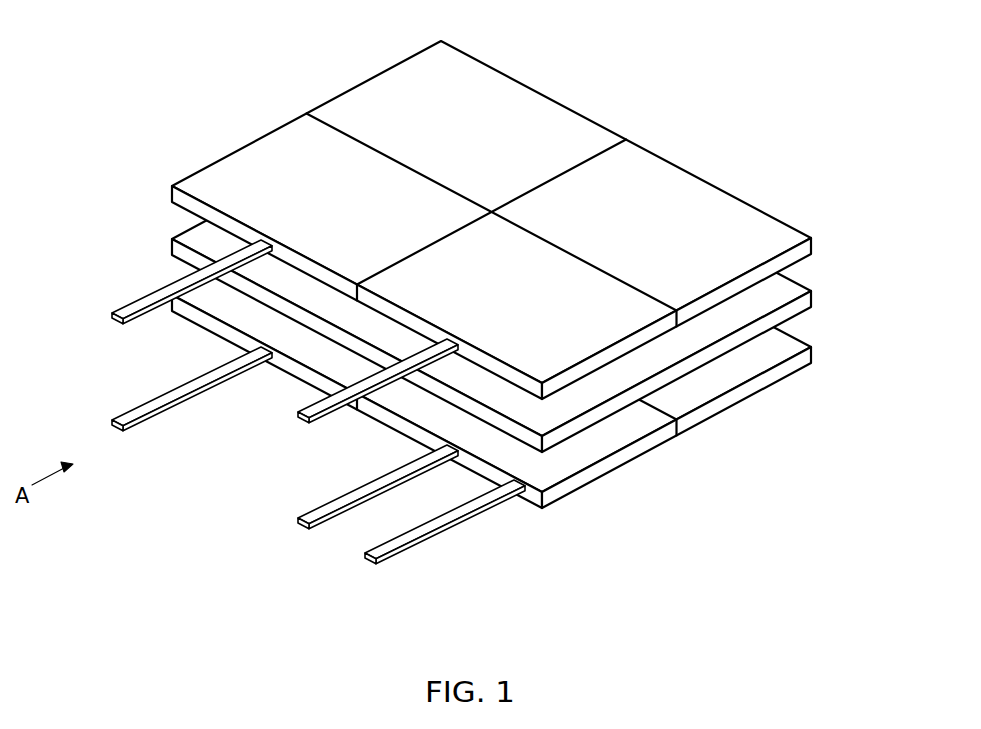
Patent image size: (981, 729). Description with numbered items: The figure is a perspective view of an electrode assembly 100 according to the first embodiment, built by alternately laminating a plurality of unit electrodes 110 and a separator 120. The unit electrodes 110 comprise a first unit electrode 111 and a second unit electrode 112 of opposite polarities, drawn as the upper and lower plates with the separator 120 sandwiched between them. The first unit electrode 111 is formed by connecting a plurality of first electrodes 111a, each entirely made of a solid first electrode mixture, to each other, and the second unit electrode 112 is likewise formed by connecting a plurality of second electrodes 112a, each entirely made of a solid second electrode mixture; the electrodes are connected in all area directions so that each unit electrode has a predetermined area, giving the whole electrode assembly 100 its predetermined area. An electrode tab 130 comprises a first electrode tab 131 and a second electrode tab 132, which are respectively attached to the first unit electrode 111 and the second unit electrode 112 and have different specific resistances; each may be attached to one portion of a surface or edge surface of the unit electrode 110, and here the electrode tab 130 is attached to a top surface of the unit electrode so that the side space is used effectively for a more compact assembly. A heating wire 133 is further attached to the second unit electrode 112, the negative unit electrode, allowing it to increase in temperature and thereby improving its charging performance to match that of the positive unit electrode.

The electrode assembly 100 is at (488, 297).
The unit electrode 110 is at (516, 280).
The first unit electrode 111 is at (523, 220).
The first electrode 111a is at (545, 118).
The separator 120 is at (195, 236).
The second unit electrode 112 is at (523, 335).
The second electrode 112a is at (738, 374).
The electrode tab 130 is at (283, 417).
The first electrode tab 131 is at (105, 317).
The second electrode tab 132 is at (293, 412).
The heating wire 133 is at (408, 548).